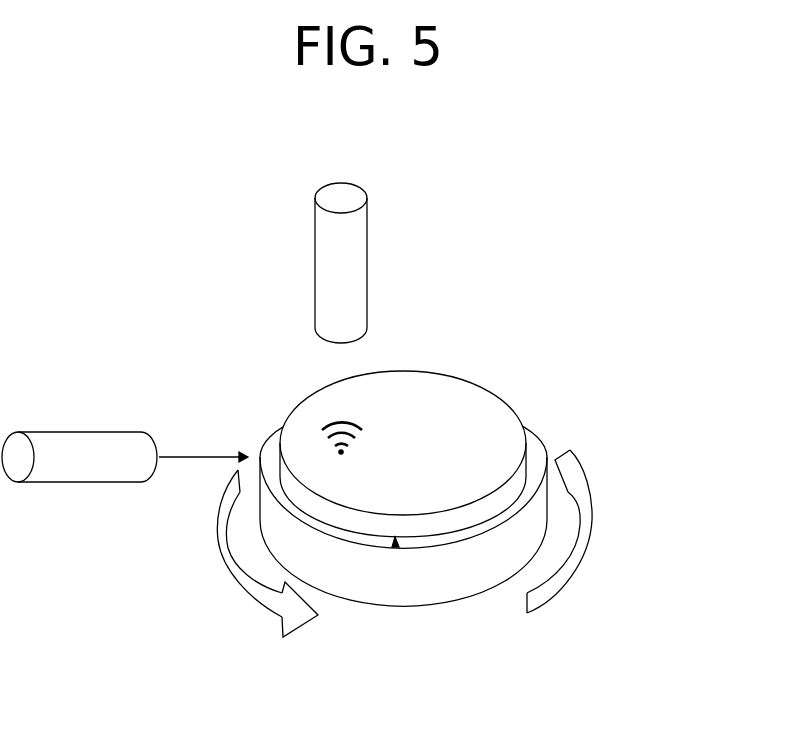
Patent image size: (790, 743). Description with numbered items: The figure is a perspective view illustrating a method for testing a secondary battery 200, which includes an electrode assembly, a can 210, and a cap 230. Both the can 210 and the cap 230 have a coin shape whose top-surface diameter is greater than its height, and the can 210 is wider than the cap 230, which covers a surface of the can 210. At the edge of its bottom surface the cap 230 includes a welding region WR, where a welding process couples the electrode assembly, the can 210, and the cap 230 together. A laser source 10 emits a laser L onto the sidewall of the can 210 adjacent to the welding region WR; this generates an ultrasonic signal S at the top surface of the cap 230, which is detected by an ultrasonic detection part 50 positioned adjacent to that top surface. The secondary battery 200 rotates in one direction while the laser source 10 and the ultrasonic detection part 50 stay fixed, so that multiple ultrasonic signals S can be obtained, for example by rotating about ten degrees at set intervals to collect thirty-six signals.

The laser source 10 is at (84, 448).
The laser L is at (196, 455).
The ultrasonic detection part 50 is at (353, 265).
The ultrasonic signal S is at (328, 420).
The secondary battery 200 is at (499, 488).
The can 210 is at (533, 522).
The cap 230 is at (493, 423).
The welding region WR is at (397, 547).